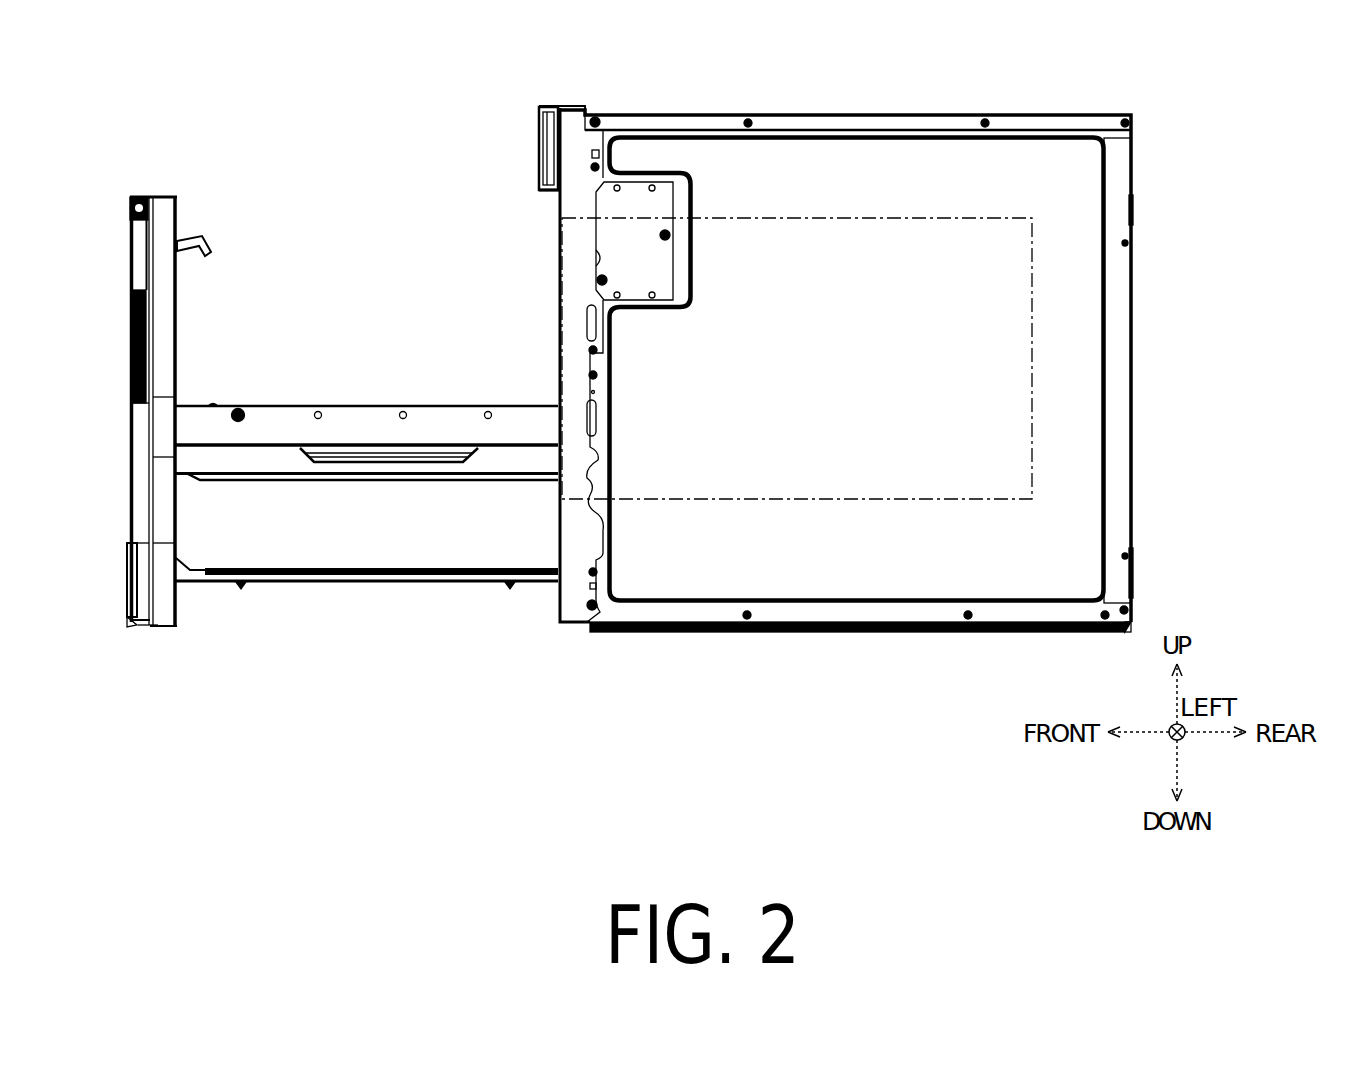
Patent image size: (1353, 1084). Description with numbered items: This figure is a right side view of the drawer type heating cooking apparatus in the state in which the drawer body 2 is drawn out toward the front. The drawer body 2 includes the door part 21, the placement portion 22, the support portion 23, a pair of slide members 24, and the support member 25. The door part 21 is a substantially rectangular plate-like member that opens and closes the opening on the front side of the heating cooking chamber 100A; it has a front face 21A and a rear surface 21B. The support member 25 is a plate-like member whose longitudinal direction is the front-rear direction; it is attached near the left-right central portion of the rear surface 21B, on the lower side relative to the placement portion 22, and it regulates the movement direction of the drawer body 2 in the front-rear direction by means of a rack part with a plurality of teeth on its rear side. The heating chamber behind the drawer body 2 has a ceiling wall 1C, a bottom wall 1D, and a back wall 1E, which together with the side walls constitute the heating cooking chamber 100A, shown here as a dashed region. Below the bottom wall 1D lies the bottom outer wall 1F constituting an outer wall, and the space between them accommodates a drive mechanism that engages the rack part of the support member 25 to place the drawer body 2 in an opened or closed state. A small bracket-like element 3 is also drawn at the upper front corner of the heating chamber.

The drawer body 2 is at (431, 712).
The door part 21 is at (166, 626).
The front face 21A is at (130, 233).
The rear surface 21B is at (177, 228).
The placement portion 22 is at (288, 483).
The support portion 23 is at (248, 463).
The slide member 24 is at (385, 430).
The support member 25 is at (433, 578).
The latch bracket 3 is at (535, 138).
The ceiling wall 1C is at (802, 218).
The bottom wall 1D is at (790, 500).
The back wall 1E is at (1032, 440).
The bottom outer wall 1F is at (862, 638).
The heating cooking chamber 100A is at (1034, 286).